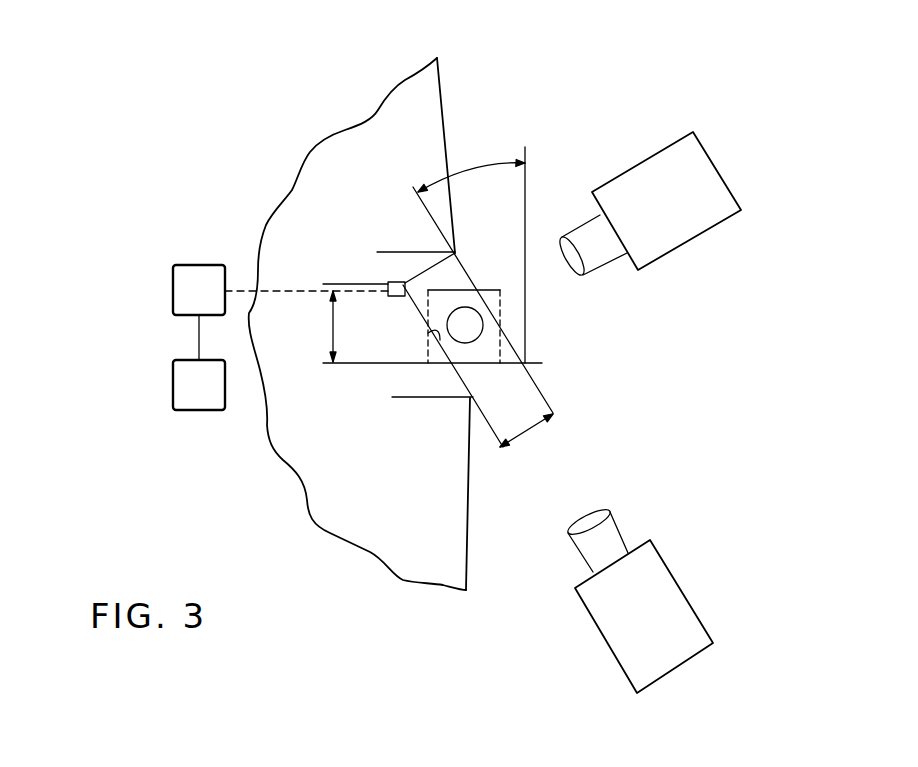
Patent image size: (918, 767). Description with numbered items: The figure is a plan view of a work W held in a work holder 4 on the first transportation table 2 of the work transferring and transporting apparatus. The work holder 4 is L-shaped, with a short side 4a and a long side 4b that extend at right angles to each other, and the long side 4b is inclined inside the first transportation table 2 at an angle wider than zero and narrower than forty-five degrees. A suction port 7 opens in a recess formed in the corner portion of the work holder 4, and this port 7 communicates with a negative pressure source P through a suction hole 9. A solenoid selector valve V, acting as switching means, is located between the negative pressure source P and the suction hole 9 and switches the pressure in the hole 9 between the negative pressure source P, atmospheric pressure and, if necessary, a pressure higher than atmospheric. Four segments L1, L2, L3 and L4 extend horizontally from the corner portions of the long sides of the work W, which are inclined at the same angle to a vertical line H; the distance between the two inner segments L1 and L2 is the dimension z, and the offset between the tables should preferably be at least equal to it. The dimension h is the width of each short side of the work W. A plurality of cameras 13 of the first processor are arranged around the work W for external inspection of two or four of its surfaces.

The first transportation table 2 is at (440, 78).
The work holder 4 is at (462, 382).
The short side 4a is at (440, 263).
The long side 4b is at (428, 333).
The suction port 7 is at (393, 282).
The suction hole 9 is at (367, 297).
The cameras 13 is at (698, 236).
The solenoid selector valve V is at (199, 290).
The negative pressure source P is at (199, 362).
The segment L1 is at (342, 286).
The segment L2 is at (340, 365).
The segment L3 is at (387, 252).
The segment L4 is at (435, 400).
The work W is at (465, 275).
The vertical line H is at (527, 212).
The dimension Z z is at (319, 326).
The dimension h is at (526, 438).